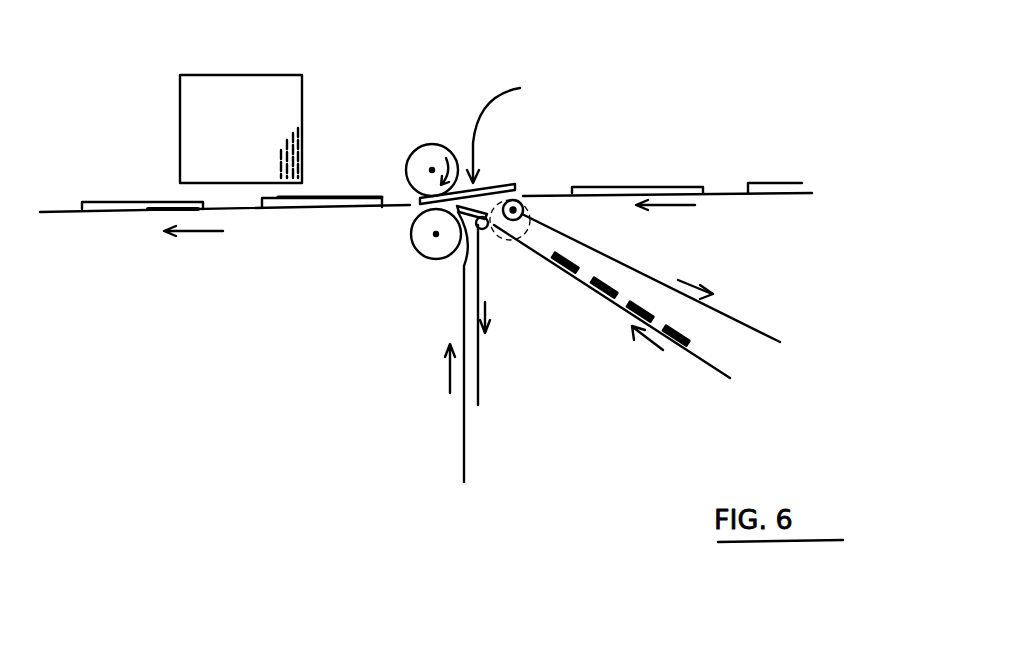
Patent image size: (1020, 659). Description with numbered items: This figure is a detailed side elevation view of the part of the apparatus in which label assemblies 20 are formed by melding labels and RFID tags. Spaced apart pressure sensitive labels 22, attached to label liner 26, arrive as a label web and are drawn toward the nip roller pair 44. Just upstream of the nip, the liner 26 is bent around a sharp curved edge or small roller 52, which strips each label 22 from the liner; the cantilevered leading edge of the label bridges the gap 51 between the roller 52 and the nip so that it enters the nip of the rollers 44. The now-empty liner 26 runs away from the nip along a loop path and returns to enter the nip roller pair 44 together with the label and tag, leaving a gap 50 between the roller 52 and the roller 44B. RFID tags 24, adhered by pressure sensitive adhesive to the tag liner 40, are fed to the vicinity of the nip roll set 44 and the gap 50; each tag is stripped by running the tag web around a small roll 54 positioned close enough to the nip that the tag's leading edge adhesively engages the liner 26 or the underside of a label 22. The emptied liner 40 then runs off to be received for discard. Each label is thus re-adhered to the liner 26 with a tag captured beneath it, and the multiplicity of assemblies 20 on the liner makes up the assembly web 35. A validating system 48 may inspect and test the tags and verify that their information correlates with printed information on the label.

The label assembly 20 is at (120, 199).
The pressure sensitive label 22 is at (483, 188).
The RFID tag 24 is at (562, 265).
The label liner 26 is at (463, 458).
The assembly web 35 is at (268, 210).
The tag liner 40 is at (483, 357).
The nip roller pair 44 is at (422, 131).
The roller 44B is at (417, 248).
The validating system 48 is at (278, 75).
The gap 50 is at (500, 250).
The gap 51 is at (513, 129).
The small roller 52 is at (523, 203).
The small roll 54 is at (478, 232).